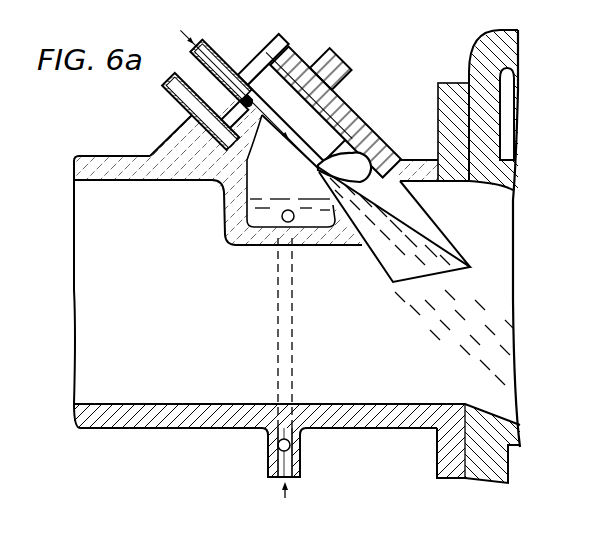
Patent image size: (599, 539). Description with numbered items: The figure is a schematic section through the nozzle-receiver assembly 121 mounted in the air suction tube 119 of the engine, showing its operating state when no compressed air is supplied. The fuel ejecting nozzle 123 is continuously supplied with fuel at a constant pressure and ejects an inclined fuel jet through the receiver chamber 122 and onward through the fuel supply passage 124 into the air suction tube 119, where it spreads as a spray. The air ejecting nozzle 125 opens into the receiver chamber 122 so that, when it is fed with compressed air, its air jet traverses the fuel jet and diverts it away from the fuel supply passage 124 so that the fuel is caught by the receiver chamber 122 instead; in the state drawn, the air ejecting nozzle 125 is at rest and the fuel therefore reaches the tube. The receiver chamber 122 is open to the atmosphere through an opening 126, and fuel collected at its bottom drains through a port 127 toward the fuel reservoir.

The air suction tube 119 is at (107, 418).
The nozzle-receiver assembly 121 is at (250, 65).
The receiver chamber 122 is at (300, 64).
The fuel ejecting nozzle 123 is at (283, 63).
The fuel supply passage 124 is at (365, 142).
The air ejecting nozzle 125 is at (248, 155).
The opening 126 is at (337, 67).
The port 127 is at (285, 222).